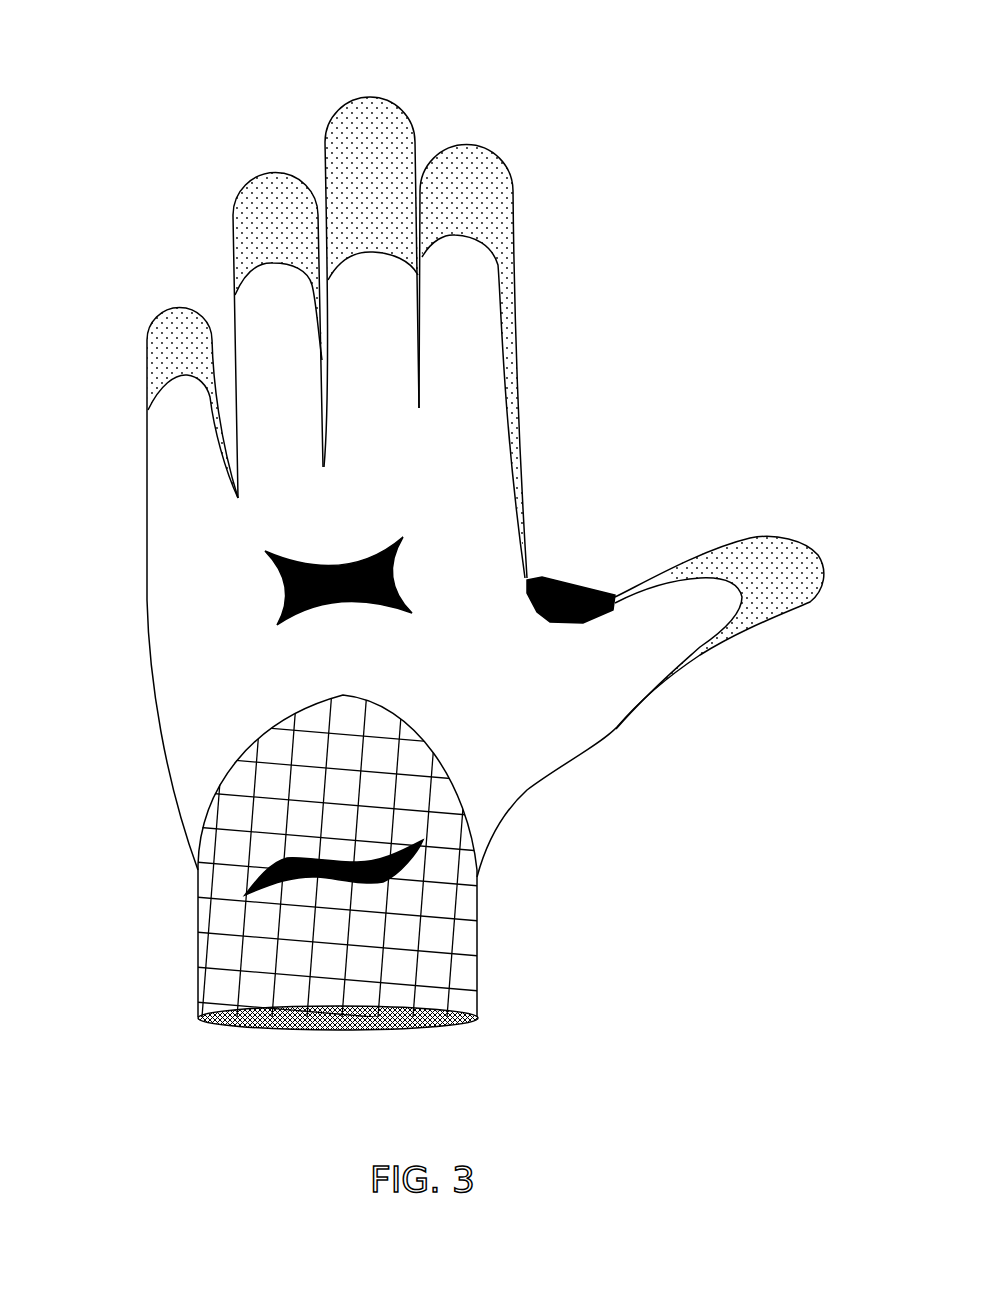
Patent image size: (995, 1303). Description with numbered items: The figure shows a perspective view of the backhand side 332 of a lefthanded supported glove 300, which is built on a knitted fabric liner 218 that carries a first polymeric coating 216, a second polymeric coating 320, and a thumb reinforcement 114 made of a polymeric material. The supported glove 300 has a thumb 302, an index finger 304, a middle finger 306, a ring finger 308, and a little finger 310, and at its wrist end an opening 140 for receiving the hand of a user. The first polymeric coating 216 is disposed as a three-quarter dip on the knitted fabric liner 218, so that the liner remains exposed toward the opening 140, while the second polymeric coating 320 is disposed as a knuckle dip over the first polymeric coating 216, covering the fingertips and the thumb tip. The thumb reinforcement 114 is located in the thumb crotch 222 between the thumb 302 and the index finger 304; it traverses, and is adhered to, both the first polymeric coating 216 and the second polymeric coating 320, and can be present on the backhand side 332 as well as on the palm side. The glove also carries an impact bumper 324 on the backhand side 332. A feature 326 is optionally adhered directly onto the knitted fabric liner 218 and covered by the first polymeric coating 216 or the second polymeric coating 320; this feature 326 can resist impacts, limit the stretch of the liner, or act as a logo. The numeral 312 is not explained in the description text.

The supported glove 300 is at (580, 60).
The thumb 302 is at (810, 552).
The index finger 304 is at (455, 143).
The middle finger 306 is at (365, 97).
The ring finger 308 is at (273, 171).
The little finger 310 is at (177, 307).
The second polymeric coating 320 is at (383, 118).
The thumb reinforcement 114 is at (552, 580).
The thumb crotch 222 is at (640, 587).
The backhand side 332 is at (683, 625).
The first polymeric coating 216 is at (530, 729).
The impact bumper 324 is at (282, 593).
The feature 326 is at (243, 877).
The knitted fabric liner 218 is at (225, 918).
The opening 140 is at (285, 1065).
The cuff opening 312 is at (480, 1018).